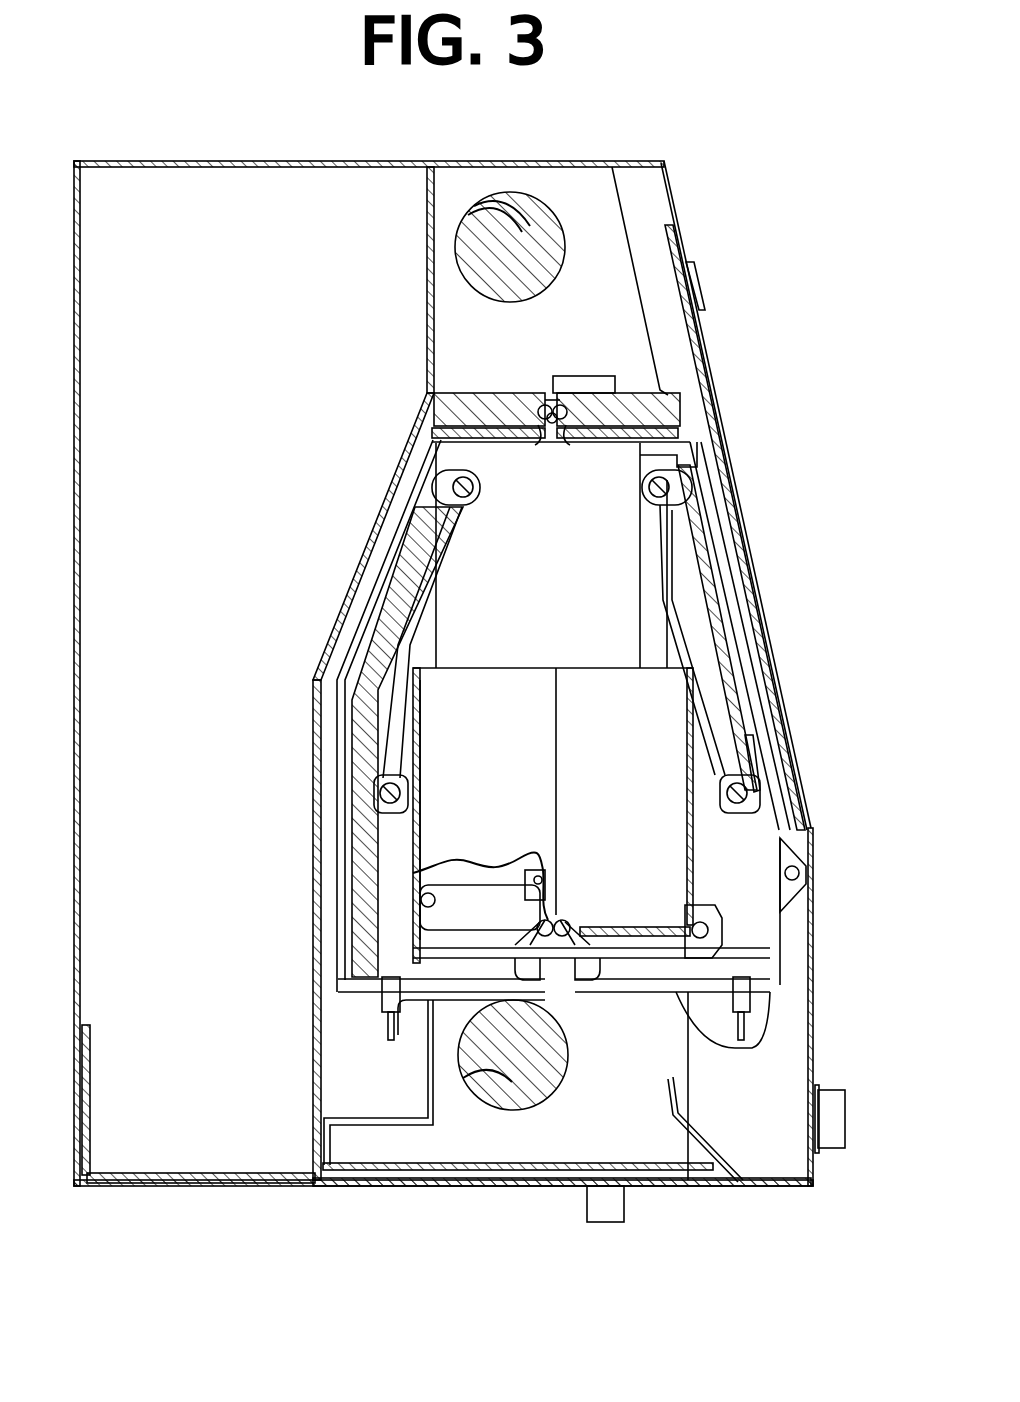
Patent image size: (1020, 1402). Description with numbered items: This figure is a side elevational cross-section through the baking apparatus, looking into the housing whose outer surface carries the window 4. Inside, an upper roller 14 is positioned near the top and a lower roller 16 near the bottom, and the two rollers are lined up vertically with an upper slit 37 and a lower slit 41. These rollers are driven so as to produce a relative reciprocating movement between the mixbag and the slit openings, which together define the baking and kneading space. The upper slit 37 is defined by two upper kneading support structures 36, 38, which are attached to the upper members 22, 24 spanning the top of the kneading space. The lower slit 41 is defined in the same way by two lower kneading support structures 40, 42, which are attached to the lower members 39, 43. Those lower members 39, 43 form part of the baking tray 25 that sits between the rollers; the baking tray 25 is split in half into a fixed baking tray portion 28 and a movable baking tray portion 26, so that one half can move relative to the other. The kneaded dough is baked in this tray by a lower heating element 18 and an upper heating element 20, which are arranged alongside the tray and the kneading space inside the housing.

The window 4 is at (752, 522).
The upper roller 14 is at (537, 215).
The lower roller 16 is at (498, 1186).
The lower heating element 18 is at (742, 828).
The upper heating element 20 is at (685, 576).
The upper member 22 is at (592, 405).
The upper member 24 is at (490, 405).
The baking tray 25 is at (662, 720).
The movable baking tray portion 26 is at (590, 690).
The fixed baking tray portion 28 is at (492, 690).
The upper kneading support structure 36 is at (543, 430).
The upper slit 37 is at (550, 445).
The upper kneading support structure 38 is at (565, 435).
The lower member 39 is at (458, 940).
The lower kneading support structure 40 is at (540, 925).
The lower slit 41 is at (562, 920).
The lower kneading support structure 42 is at (566, 925).
The lower member 43 is at (628, 937).